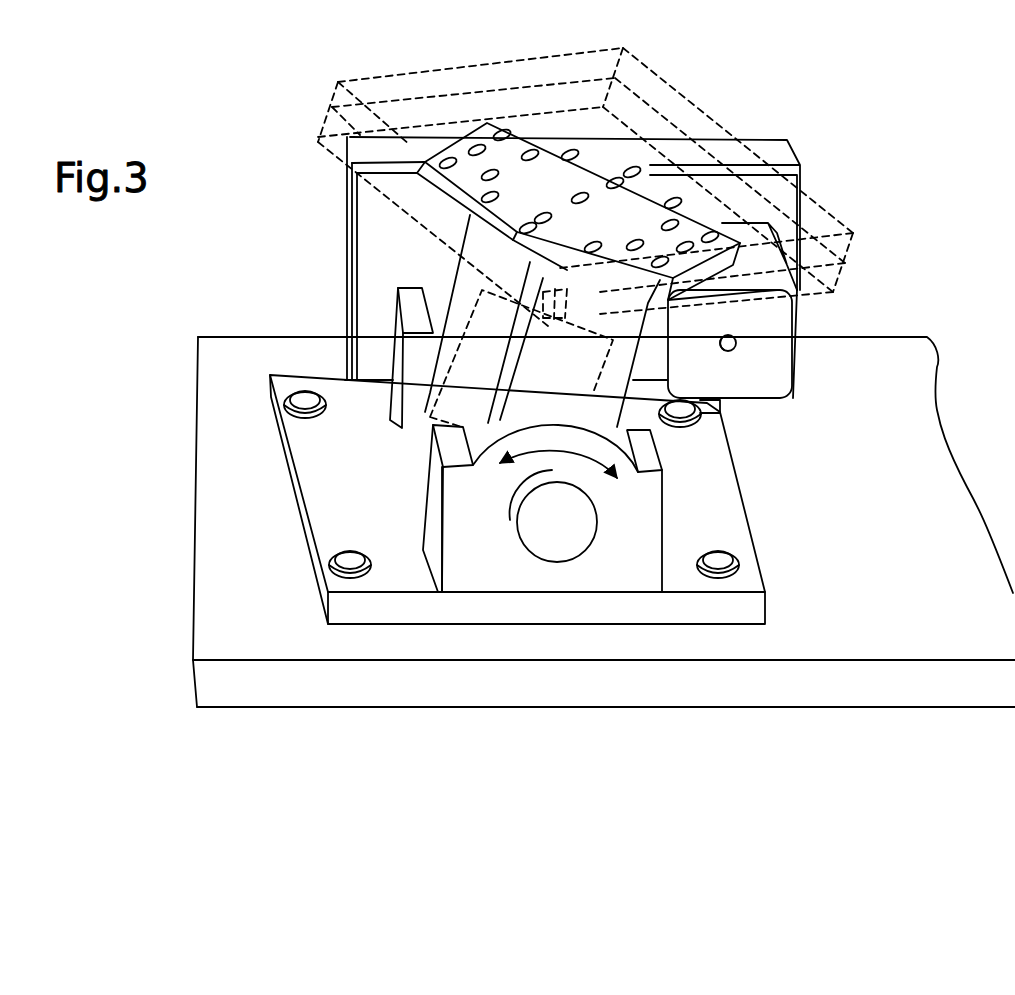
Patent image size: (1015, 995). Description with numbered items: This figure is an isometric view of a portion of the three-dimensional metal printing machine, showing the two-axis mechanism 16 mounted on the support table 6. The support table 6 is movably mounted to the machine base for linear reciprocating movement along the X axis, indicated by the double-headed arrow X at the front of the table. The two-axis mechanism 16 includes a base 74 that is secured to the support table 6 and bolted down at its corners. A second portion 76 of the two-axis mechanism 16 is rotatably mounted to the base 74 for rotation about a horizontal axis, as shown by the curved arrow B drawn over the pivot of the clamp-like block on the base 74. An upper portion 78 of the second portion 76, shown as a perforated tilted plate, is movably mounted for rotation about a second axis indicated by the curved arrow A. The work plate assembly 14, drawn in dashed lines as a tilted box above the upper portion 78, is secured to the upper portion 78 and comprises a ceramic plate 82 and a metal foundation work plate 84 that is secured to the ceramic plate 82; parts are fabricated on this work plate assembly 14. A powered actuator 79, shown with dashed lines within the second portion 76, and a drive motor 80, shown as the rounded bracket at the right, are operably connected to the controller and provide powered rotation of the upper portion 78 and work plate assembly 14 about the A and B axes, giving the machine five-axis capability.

The support table 6 is at (323, 710).
The work plate assembly 14 is at (843, 213).
The two-axis mechanism 16 is at (290, 545).
The base 74 is at (286, 462).
The second portion 76 is at (447, 287).
The upper portion 78 is at (463, 140).
The powered actuator 79 is at (445, 395).
The drive motor 80 is at (767, 403).
The ceramic plate 82 is at (853, 288).
The metal foundation work plate 84 is at (848, 250).
The second axis (arrow A) A is at (527, 190).
The horizontal axis (arrow B) B is at (594, 454).
The X axis X is at (651, 748).